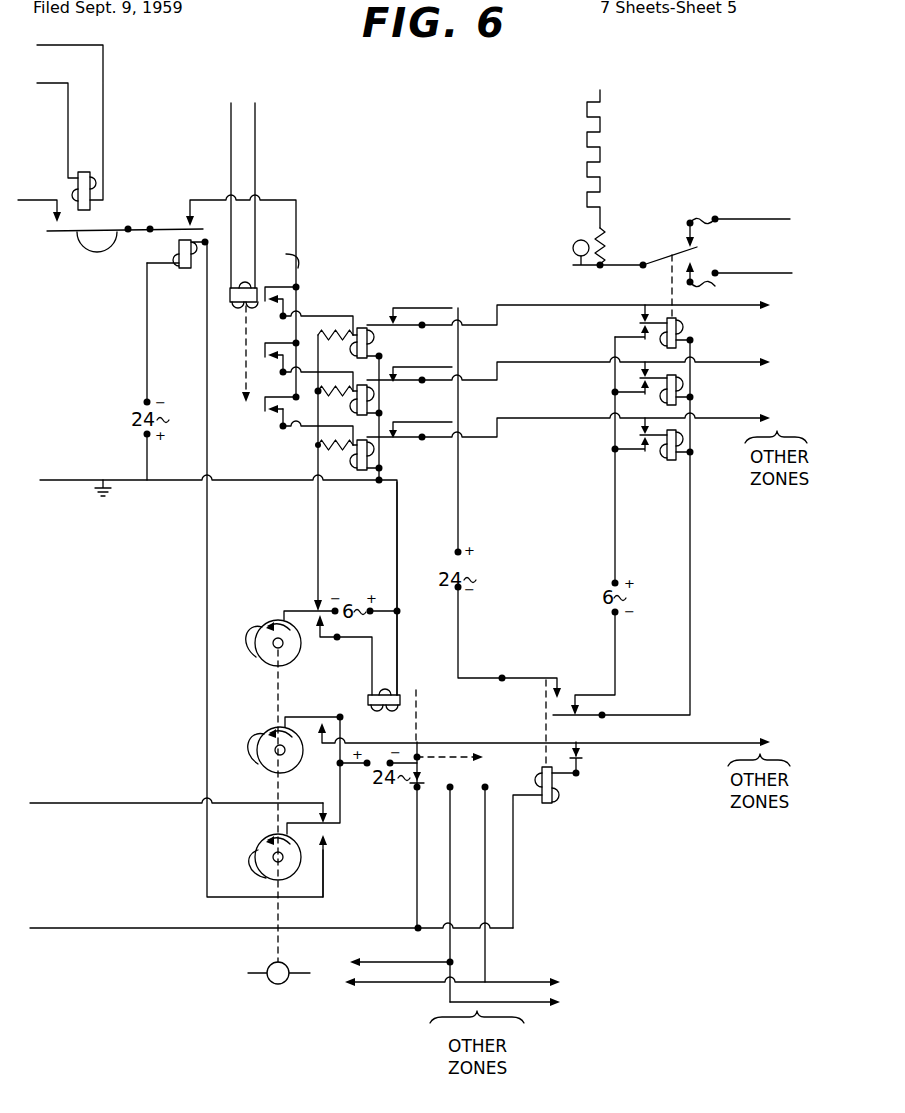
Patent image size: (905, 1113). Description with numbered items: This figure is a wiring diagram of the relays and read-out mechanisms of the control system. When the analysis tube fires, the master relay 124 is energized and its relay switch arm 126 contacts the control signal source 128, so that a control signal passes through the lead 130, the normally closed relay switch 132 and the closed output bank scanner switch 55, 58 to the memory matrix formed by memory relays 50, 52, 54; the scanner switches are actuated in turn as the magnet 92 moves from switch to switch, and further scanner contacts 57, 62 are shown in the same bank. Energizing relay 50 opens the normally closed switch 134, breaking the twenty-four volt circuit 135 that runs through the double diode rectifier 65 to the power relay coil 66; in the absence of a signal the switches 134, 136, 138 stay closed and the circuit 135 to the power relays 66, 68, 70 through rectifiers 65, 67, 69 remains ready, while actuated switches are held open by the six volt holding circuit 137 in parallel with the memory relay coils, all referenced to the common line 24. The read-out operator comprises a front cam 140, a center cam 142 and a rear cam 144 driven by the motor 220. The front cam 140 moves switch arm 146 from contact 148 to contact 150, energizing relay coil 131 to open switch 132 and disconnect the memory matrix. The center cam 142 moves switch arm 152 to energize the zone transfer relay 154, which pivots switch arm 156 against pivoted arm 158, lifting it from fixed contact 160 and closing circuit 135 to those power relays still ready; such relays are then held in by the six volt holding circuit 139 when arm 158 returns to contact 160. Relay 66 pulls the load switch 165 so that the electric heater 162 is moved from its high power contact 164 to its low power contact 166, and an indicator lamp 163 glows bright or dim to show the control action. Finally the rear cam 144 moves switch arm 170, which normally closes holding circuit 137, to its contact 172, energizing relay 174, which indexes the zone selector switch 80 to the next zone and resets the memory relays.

The 24 volt circuit 24 is at (52, 483).
The memory relay 50 is at (374, 354).
The memory relay 52 is at (374, 411).
The memory relay 54 is at (382, 466).
The output bank scanner switch 55 is at (282, 256).
The switch 57 is at (262, 412).
The output bank scanner switch 58 is at (298, 292).
The switch contact 62 is at (278, 432).
The double diode rectifier 65 is at (640, 326).
The power relay coil 66 is at (682, 336).
The rectifier 67 is at (637, 381).
The power relay 68 is at (682, 396).
The rectifier 69 is at (637, 443).
The power relay 70 is at (690, 453).
The zone selector switch 80 is at (420, 770).
The magnet 92 is at (236, 304).
The master relay 124 is at (92, 182).
The relay switch arm 126 is at (65, 234).
The control signal source 128 is at (36, 198).
The lead 130 is at (128, 234).
The relay coil 131 is at (183, 268).
The relay switch 132 is at (170, 228).
The switch 134 is at (416, 306).
The 24 volt circuit 135 is at (459, 511).
The switch 136 is at (431, 366).
The 6 volt holding circuit 137 is at (397, 572).
The switch 138 is at (438, 422).
The 6 volt holding circuit 139 is at (614, 556).
The front cam 140 is at (262, 858).
The center cam 142 is at (262, 765).
The rear cam 144 is at (262, 634).
The switch arm 146 is at (328, 830).
The contact 148 is at (343, 812).
The contact 150 is at (328, 842).
The switch arm 152 is at (320, 716).
The zone transfer relay 154 is at (560, 790).
The switch arm 156 is at (536, 677).
The pivoted arm 158 is at (603, 718).
The fixed contact 160 is at (580, 695).
The electric heater 162 is at (588, 136).
The indicator lamp 163 is at (576, 242).
The high power contact 164 is at (688, 236).
The load switch 165 is at (660, 257).
The low power contact 166 is at (695, 270).
The switch arm 170 is at (283, 610).
The contact 172 is at (320, 641).
The relay 174 is at (402, 691).
The motor 220 is at (287, 982).